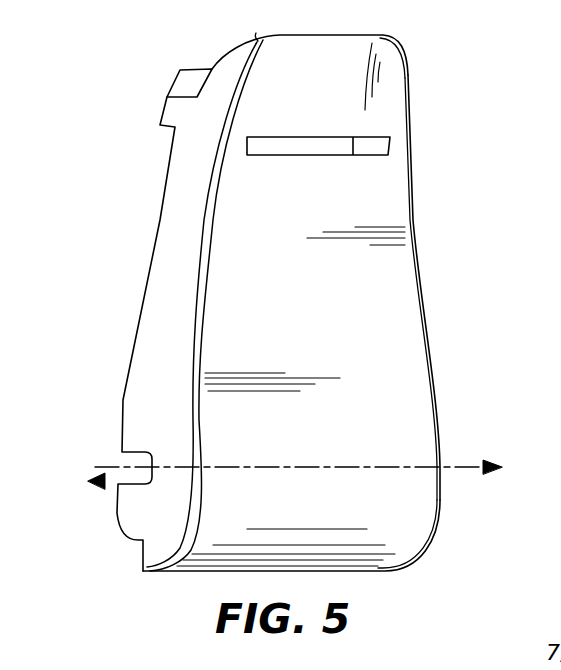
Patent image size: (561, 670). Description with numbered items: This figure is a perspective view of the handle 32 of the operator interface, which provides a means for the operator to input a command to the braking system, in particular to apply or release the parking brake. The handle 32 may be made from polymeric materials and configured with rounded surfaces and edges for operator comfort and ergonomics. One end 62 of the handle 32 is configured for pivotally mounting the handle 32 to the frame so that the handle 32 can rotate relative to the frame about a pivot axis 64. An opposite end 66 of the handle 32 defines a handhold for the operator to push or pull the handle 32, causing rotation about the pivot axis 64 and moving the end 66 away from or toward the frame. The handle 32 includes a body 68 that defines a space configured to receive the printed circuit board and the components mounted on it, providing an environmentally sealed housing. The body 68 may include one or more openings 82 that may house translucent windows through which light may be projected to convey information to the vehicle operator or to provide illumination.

The handle 32 is at (127, 130).
The one end 62 is at (422, 567).
The pivot axis 64 is at (462, 468).
The opposite end 66 is at (440, 55).
The body 68 is at (402, 327).
The openings 82 is at (256, 141).